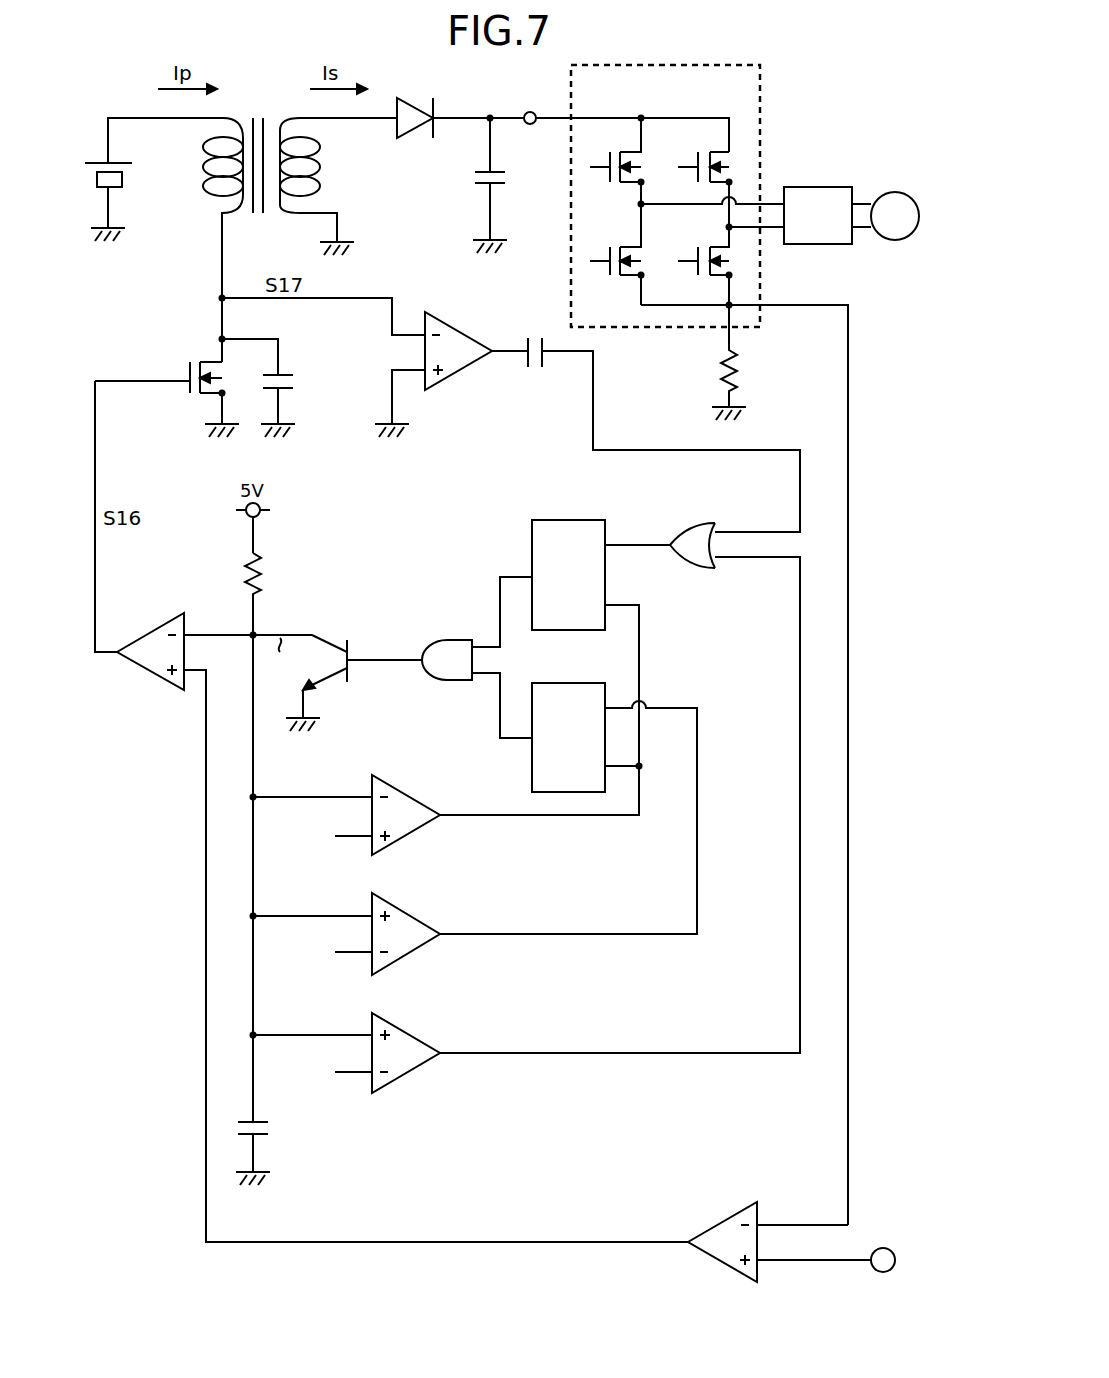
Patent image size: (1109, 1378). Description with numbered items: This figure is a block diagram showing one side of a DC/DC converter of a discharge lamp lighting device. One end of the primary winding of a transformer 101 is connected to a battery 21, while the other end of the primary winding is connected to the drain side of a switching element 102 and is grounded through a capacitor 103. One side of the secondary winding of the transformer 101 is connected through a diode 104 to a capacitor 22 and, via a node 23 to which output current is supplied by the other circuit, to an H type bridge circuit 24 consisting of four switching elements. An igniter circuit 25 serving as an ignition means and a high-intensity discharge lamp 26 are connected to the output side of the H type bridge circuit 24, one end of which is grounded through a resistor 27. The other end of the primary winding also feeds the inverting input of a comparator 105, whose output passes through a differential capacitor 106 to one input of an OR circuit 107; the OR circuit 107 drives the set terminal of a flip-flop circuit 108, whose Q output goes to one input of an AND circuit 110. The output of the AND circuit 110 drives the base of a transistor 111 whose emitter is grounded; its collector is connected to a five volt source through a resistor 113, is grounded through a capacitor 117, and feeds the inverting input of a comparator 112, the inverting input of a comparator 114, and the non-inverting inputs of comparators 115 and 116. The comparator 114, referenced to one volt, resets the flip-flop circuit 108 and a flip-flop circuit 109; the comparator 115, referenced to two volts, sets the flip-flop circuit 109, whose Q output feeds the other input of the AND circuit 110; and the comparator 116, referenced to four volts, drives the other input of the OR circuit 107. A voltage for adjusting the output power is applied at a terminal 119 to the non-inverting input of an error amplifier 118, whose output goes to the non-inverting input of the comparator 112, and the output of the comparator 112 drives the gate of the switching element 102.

The battery 21 is at (133, 173).
The capacitor 22 is at (508, 178).
The node 23 is at (530, 108).
The H type bridge circuit 24 is at (727, 64).
The igniter circuit 25 is at (830, 186).
The high-intensity discharge lamp 26 is at (900, 190).
The resistor 27 is at (748, 368).
The transformer 101 is at (258, 107).
The switching element 102 is at (184, 360).
The capacitor 103 is at (297, 381).
The diode 104 is at (418, 99).
The comparator 105 is at (450, 314).
The differential capacitor 106 is at (535, 334).
The OR circuit 107 is at (683, 525).
The flip-flop circuit 108 is at (590, 520).
The flip-flop circuit 109 is at (590, 683).
The AND circuit 110 is at (455, 640).
The transistor 111 is at (338, 635).
The comparator 112 is at (158, 629).
The resistor 113 is at (268, 570).
The comparator 114 is at (405, 788).
The comparator 115 is at (405, 905).
The comparator 116 is at (405, 1025).
The capacitor 117 is at (272, 1125).
The error amplifier 118 is at (730, 1215).
The terminal 119 is at (885, 1248).